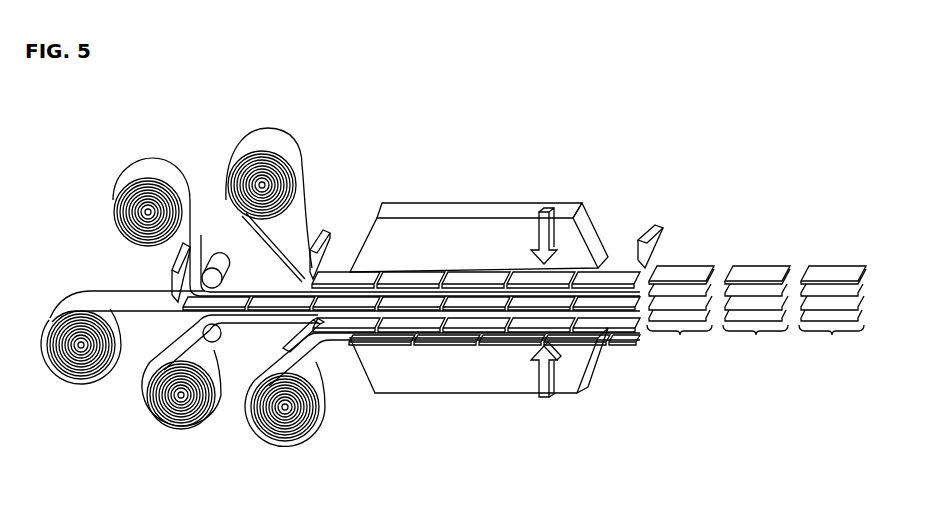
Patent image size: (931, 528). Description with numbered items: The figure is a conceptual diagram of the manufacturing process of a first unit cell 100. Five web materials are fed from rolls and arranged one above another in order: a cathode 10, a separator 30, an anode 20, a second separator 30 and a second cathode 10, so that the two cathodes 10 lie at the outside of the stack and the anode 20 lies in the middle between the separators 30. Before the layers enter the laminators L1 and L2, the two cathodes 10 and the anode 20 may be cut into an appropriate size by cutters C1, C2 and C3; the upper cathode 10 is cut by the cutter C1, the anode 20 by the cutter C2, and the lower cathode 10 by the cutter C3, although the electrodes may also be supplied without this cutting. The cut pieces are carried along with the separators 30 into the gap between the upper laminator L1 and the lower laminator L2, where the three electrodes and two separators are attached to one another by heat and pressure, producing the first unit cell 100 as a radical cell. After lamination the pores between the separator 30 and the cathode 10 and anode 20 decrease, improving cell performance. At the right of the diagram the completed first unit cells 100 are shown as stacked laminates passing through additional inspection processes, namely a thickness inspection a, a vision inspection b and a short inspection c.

The cathode 10 is at (290, 135).
The anode 20 is at (62, 300).
The separator 30 is at (146, 210).
The first unit cell 100 is at (760, 277).
The cutter C1 is at (328, 240).
The cutter C2 is at (174, 284).
The cutter C3 is at (318, 342).
The laminator L1 is at (482, 208).
The laminator L2 is at (472, 386).
The thickness inspection a is at (688, 267).
The vision inspection b is at (764, 267).
The short inspection c is at (840, 267).